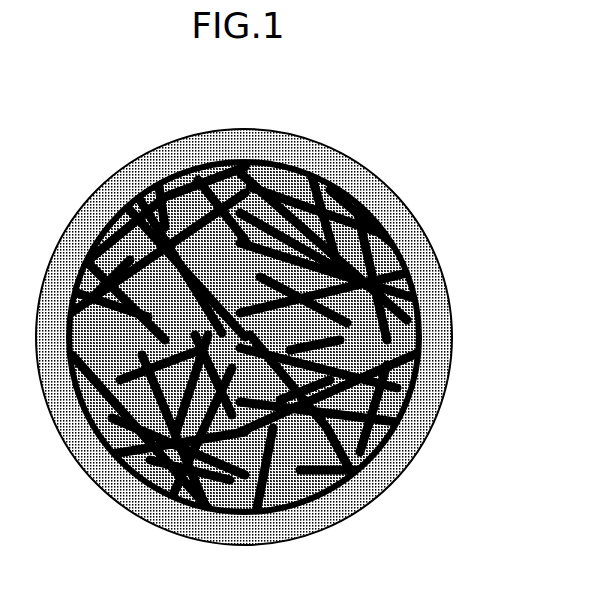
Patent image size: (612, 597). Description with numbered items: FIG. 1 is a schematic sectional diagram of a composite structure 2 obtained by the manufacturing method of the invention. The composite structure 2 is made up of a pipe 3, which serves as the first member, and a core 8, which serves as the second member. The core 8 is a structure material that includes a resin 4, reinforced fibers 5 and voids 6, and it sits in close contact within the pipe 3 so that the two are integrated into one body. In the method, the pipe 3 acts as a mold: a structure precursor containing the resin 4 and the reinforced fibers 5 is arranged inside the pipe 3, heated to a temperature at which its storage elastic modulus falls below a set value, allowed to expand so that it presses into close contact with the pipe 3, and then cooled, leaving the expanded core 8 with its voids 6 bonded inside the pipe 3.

The composite structure 2 is at (346, 145).
The pipe 3 is at (440, 338).
The resin 4 is at (172, 178).
The reinforced fibers 5 is at (347, 272).
The voids 6 is at (225, 177).
The core 8 is at (343, 487).